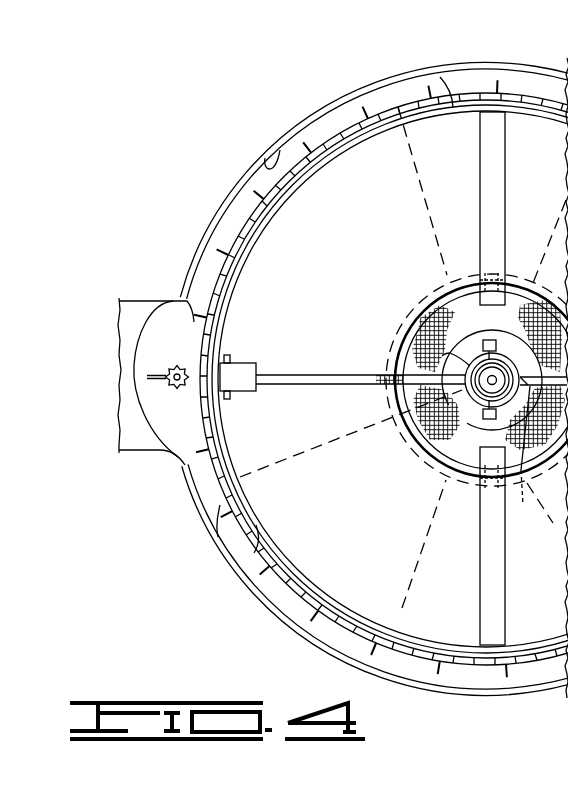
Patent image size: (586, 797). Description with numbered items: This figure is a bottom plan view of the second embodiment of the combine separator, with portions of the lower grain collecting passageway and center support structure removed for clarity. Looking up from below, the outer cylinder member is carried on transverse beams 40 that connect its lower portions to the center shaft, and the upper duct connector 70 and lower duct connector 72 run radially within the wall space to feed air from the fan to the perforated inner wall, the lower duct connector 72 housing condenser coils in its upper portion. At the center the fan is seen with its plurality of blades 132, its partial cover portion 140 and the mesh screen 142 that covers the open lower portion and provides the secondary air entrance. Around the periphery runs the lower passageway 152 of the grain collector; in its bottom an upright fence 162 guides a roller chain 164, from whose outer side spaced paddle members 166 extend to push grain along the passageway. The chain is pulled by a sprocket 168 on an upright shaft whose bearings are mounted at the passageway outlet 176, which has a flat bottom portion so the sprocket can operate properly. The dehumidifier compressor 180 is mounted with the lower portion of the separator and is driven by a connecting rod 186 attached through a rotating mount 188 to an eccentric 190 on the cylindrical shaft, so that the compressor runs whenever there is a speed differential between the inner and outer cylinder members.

The transverse beams 40 is at (495, 200).
The upper duct connector 70 is at (433, 173).
The lower duct connector 72 is at (290, 437).
The fan blades 132 is at (432, 288).
The partial cover portion 140 is at (448, 410).
The mesh screen 142 is at (440, 452).
The lower passageway 152 is at (303, 627).
The upright fence 162 is at (240, 262).
The roller chain 164 is at (384, 107).
The paddle members 166 is at (265, 158).
The sprocket 168 is at (170, 405).
The passageway outlet 176 is at (143, 440).
The compressor 180 is at (243, 371).
The connecting rod 186 is at (282, 383).
The rotating mount 188 is at (462, 396).
The eccentric 190 is at (442, 356).